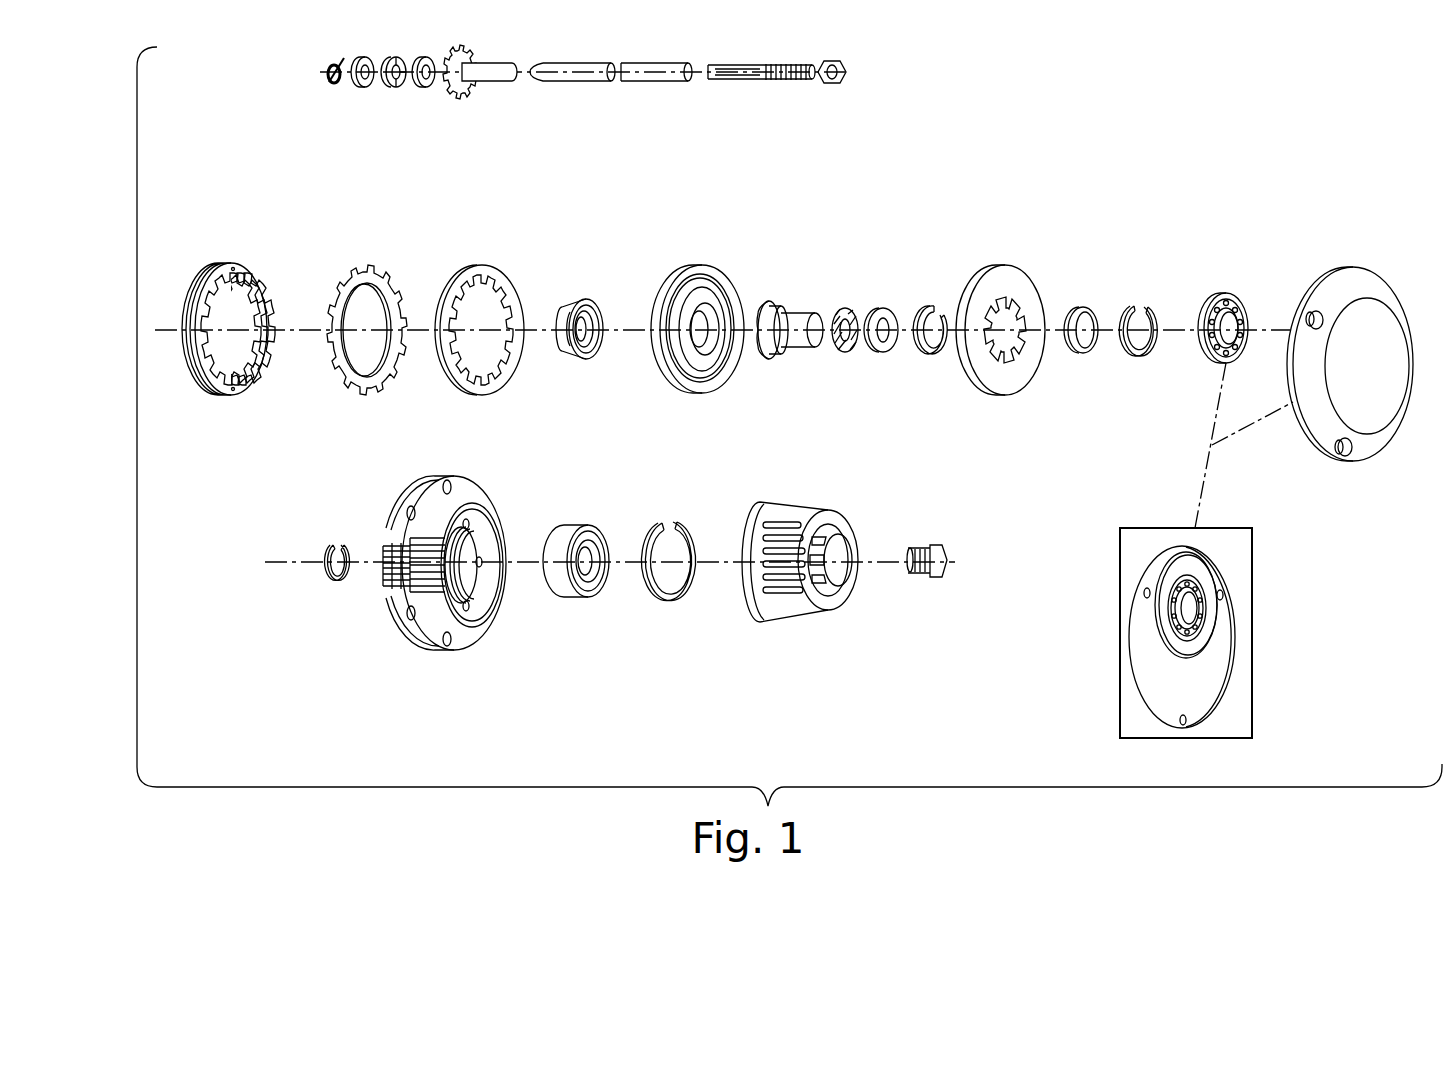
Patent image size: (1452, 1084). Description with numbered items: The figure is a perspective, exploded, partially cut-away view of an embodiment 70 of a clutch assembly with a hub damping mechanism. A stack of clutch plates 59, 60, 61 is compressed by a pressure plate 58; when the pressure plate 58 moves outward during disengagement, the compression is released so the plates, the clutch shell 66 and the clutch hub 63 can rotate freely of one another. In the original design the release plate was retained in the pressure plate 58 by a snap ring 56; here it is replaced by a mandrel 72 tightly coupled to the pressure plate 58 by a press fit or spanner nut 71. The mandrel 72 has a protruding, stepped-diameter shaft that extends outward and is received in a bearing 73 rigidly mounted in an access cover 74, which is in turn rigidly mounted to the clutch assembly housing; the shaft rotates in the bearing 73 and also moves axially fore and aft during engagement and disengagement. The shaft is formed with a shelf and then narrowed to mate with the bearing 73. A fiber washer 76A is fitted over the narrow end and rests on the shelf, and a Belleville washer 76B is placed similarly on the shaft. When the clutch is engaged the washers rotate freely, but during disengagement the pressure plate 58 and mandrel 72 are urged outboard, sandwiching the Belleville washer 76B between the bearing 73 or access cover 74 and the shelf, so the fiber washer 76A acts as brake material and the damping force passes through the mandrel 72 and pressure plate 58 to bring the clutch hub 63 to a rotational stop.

The embodiment 70 is at (1152, 113).
The clutch plate 59 is at (238, 264).
The clutch plate 60 is at (377, 264).
The clutch plate 61 is at (485, 268).
The spanner nut 71 is at (580, 300).
The pressure plate 58 is at (688, 268).
The mandrel 72 is at (780, 304).
The fiber washer 76A is at (846, 351).
The Belleville washer 76B is at (883, 308).
The snap ring 56 is at (935, 355).
The bearing 73 is at (1215, 296).
The access cover 74 is at (1358, 298).
The clutch shell 66 is at (462, 488).
The clutch hub 63 is at (800, 515).